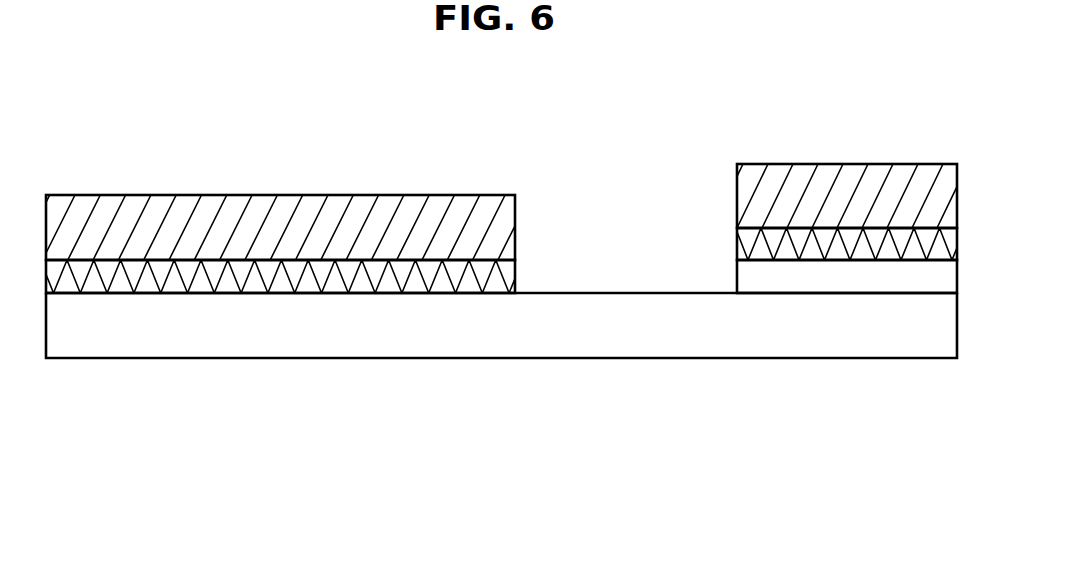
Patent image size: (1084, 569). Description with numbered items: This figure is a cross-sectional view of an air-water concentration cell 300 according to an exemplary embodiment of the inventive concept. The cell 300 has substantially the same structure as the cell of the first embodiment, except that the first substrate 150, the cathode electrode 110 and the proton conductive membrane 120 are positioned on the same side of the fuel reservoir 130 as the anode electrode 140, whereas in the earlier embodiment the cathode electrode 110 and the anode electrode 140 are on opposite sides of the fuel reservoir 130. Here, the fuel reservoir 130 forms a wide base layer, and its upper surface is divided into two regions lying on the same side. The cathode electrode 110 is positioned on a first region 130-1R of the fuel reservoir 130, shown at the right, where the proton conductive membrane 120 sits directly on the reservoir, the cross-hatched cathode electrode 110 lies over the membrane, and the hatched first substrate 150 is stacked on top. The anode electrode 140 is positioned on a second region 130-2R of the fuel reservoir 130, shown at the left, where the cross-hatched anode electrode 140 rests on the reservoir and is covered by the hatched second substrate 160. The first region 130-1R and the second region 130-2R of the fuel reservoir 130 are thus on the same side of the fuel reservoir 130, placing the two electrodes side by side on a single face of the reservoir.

The air-water concentration cell 300 is at (158, 115).
The fuel reservoir 130 is at (568, 341).
The second region of the fuel reservoir 130-2R is at (279, 291).
The first region of the fuel reservoir 130-1R is at (846, 291).
The second substrate 160 is at (518, 228).
The anode electrode 140 is at (518, 277).
The first substrate 150 is at (735, 198).
The cathode electrode 110 is at (735, 245).
The proton conductive membrane 120 is at (735, 278).